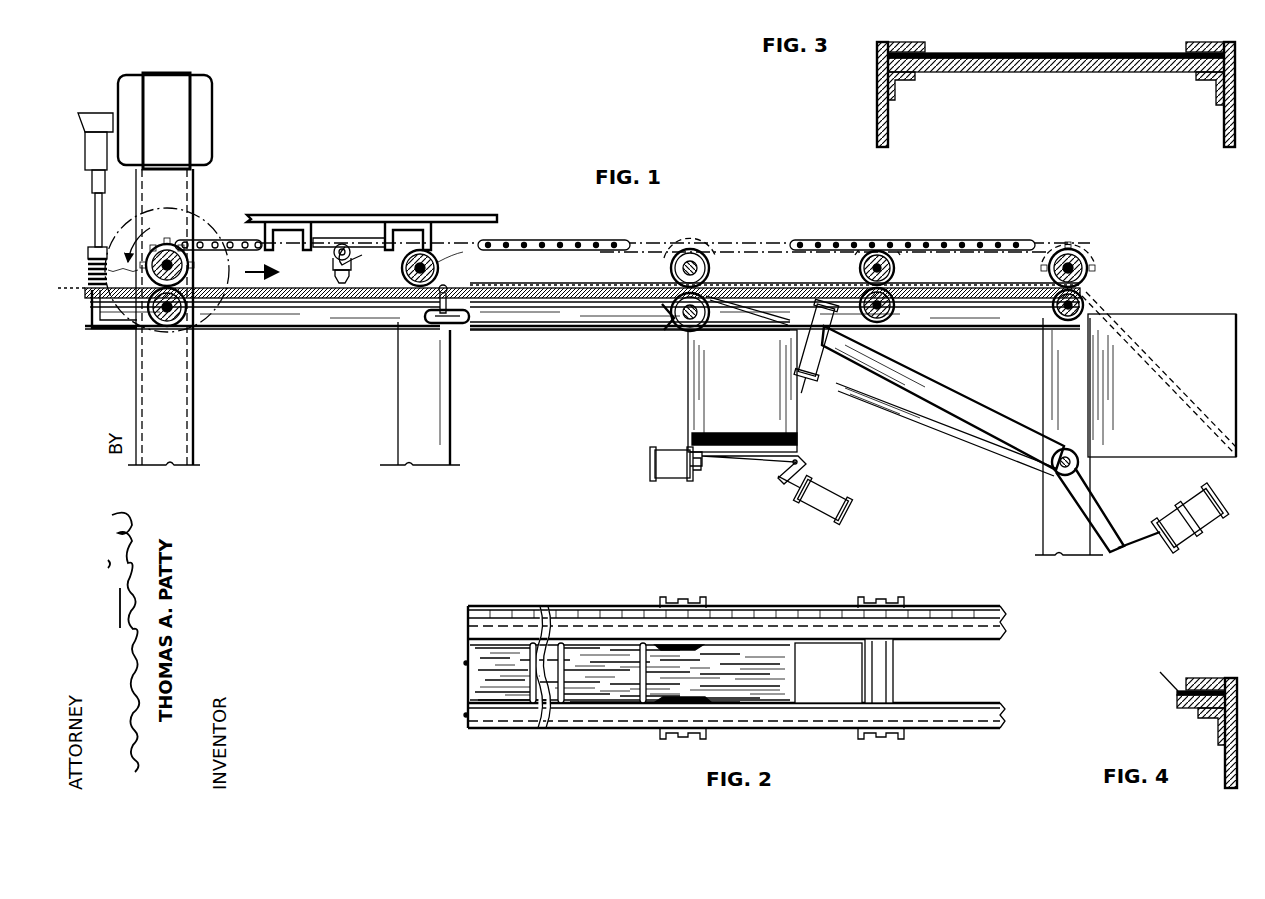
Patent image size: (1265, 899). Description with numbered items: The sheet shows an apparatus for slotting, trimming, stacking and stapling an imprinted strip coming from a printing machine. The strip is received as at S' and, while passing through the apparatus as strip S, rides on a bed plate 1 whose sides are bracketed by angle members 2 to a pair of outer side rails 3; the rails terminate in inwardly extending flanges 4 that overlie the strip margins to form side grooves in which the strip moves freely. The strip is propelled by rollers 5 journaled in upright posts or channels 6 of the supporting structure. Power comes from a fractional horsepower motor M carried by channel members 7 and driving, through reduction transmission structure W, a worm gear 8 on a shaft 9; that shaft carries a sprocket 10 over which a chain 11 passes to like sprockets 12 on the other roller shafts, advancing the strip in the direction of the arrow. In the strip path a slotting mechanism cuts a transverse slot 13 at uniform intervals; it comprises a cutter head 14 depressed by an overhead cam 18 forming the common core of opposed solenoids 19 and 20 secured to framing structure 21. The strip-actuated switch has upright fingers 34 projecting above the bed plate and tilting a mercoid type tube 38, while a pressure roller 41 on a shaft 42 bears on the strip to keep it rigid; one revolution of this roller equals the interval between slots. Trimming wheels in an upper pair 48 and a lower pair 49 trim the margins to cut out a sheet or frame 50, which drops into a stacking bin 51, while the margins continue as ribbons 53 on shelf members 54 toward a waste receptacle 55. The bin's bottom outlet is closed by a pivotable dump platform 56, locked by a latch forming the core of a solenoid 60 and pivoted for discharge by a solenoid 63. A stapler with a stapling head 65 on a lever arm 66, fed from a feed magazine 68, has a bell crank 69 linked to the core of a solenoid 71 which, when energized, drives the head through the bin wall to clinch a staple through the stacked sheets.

In FIG. 1, the bed plate 1 is at (570, 298).
In FIG. 3, the bed plate 1 is at (1140, 70).
In FIG. 1, the angle members 2 is at (292, 306).
In FIG. 3, the angle members 2 is at (898, 92).
In FIG. 4, the angle members 2 is at (1218, 732).
In FIG. 1, the outer side rails 3 is at (330, 322).
In FIG. 3, the outer side rails 3 is at (877, 100).
In FIG. 4, the outer side rails 3 is at (1228, 760).
In FIG. 1, the inwardly extending flanges 4 is at (986, 284).
In FIG. 3, the inwardly extending flanges 4 is at (897, 44).
In FIG. 4, the inwardly extending flanges 4 is at (1200, 678).
In FIG. 2, the inwardly extending flanges 4 is at (468, 632).
In FIG. 1, the rollers 5 is at (167, 326).
In FIG. 2, the rollers 5 is at (888, 688).
In FIG. 1, the upright posts or channels 6 is at (396, 437).
In FIG. 2, the upright posts or channels 6 is at (666, 605).
In FIG. 1, the channel members 7 is at (186, 432).
In FIG. 1, the worm gear 8 is at (196, 222).
In FIG. 1, the shaft 9 is at (145, 265).
In FIG. 1, the sprocket 10 is at (190, 268).
In FIG. 1, the chain 11 is at (956, 242).
In FIG. 2, the chain 11 is at (752, 607).
In FIG. 1, the sprockets 12 is at (1082, 254).
In FIG. 2, the transverse slot 13 is at (530, 688).
In FIG. 1, the cutter head 14 is at (335, 270).
In FIG. 1, the overhead cam 18 is at (345, 243).
In FIG. 1, the solenoid 19 is at (298, 233).
In FIG. 1, the solenoid 20 is at (416, 233).
In FIG. 1, the framing structure 21 is at (272, 216).
In FIG. 1, the fingers 34 is at (448, 287).
In FIG. 1, the mercoid type tube 38 is at (433, 324).
In FIG. 1, the pressure roller 41 is at (402, 268).
In FIG. 1, the shaft 42 is at (438, 264).
In FIG. 1, the upper pair of trimming wheels 48 is at (692, 258).
In FIG. 2, the upper pair of trimming wheels 48 is at (668, 651).
In FIG. 1, the lower pair of trimming wheels 49 is at (676, 326).
In FIG. 1, the sheet or frame 50 is at (745, 296).
In FIG. 2, the sheet or frame 50 is at (785, 678).
In FIG. 1, the stacking bin 51 is at (694, 412).
In FIG. 1, the ribbons 53 is at (1090, 300).
In FIG. 2, the ribbons 53 is at (1006, 636).
In FIG. 4, the shelf members 54 is at (1177, 704).
In FIG. 1, the waste receptacle 55 is at (1200, 318).
In FIG. 1, the dump platform 56 is at (742, 460).
In FIG. 1, the solenoid 60 is at (652, 466).
In FIG. 1, the solenoid 63 is at (846, 500).
In FIG. 1, the stapling head 65 is at (806, 388).
In FIG. 1, the lever arm 66 is at (958, 405).
In FIG. 1, the feed magazine 68 is at (930, 420).
In FIG. 1, the bell crank 69 is at (1088, 508).
In FIG. 1, the solenoid 71 is at (1188, 528).
In FIG. 1, the strip S is at (582, 278).
In FIG. 3, the strip S is at (1056, 40).
In FIG. 2, the strip S is at (611, 667).
In FIG. 1, the strip S' is at (73, 302).
In FIG. 1, the reduction transmission structure W is at (101, 118).
In FIG. 1, the motor M is at (212, 88).